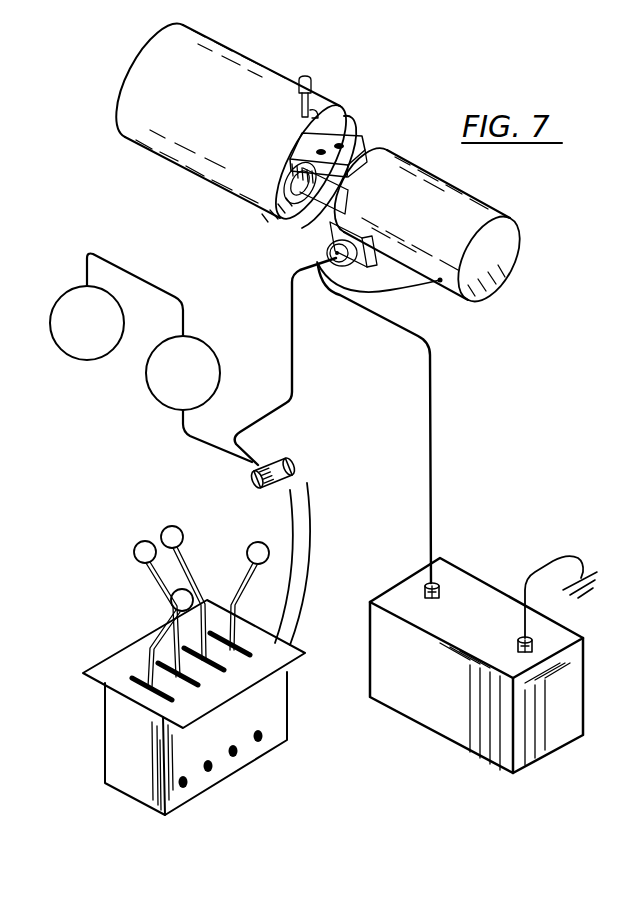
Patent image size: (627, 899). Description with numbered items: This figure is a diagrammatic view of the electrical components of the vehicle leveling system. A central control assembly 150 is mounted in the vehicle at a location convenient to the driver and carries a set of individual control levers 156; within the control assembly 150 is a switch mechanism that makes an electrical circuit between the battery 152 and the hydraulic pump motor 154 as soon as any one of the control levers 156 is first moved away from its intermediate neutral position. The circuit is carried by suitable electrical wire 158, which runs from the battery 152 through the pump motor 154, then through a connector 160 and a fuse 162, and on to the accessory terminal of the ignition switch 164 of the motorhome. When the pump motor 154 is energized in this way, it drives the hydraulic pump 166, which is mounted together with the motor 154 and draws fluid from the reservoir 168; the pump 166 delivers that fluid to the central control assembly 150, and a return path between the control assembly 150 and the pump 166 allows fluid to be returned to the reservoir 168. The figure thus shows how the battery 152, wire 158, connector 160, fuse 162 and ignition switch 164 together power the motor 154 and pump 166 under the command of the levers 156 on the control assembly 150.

The central control assembly 150 is at (263, 700).
The battery 152 is at (410, 692).
The hydraulic pump motor 154 is at (463, 197).
The control levers 156 is at (257, 543).
The electrical wire 158 is at (293, 368).
The connector 160 is at (290, 463).
The fuse 162 is at (193, 350).
The ignition switch 164 is at (92, 355).
The hydraulic pump 166 is at (347, 143).
The reservoir 168 is at (195, 153).